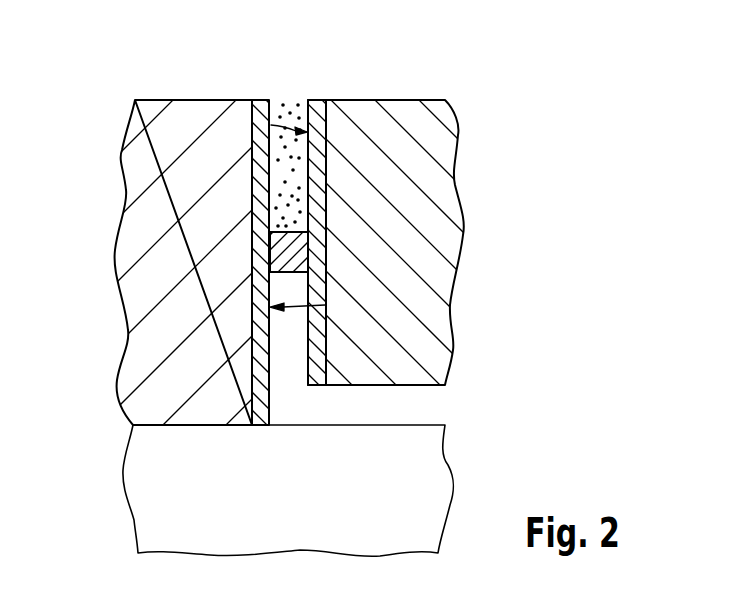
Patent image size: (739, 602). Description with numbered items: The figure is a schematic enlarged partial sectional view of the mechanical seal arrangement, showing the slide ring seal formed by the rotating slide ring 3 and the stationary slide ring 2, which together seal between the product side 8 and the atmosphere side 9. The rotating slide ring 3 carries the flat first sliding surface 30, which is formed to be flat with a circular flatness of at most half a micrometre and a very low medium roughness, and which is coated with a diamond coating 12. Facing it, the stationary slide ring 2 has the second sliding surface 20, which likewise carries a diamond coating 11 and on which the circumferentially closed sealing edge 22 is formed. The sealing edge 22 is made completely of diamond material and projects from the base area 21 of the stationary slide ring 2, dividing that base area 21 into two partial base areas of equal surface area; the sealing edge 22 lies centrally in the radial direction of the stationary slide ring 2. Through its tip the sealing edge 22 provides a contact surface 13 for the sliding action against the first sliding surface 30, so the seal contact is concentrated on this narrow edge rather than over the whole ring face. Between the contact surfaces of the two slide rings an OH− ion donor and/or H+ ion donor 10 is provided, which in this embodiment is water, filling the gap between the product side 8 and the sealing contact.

The stationary slide ring 2 is at (410, 117).
The rotating slide ring 3 is at (157, 113).
The product side 8 is at (329, 59).
The atmosphere side 9 is at (427, 407).
The OH− ion donor and/or H+ ion donor 10 is at (283, 104).
The diamond coating 11 is at (317, 170).
The diamond coating 12 is at (262, 155).
The contact surface 13 is at (268, 259).
The second sliding surface 20 is at (254, 105).
The base area 21 is at (267, 345).
The sealing edge 22 is at (282, 243).
The first sliding surface 30 is at (325, 305).